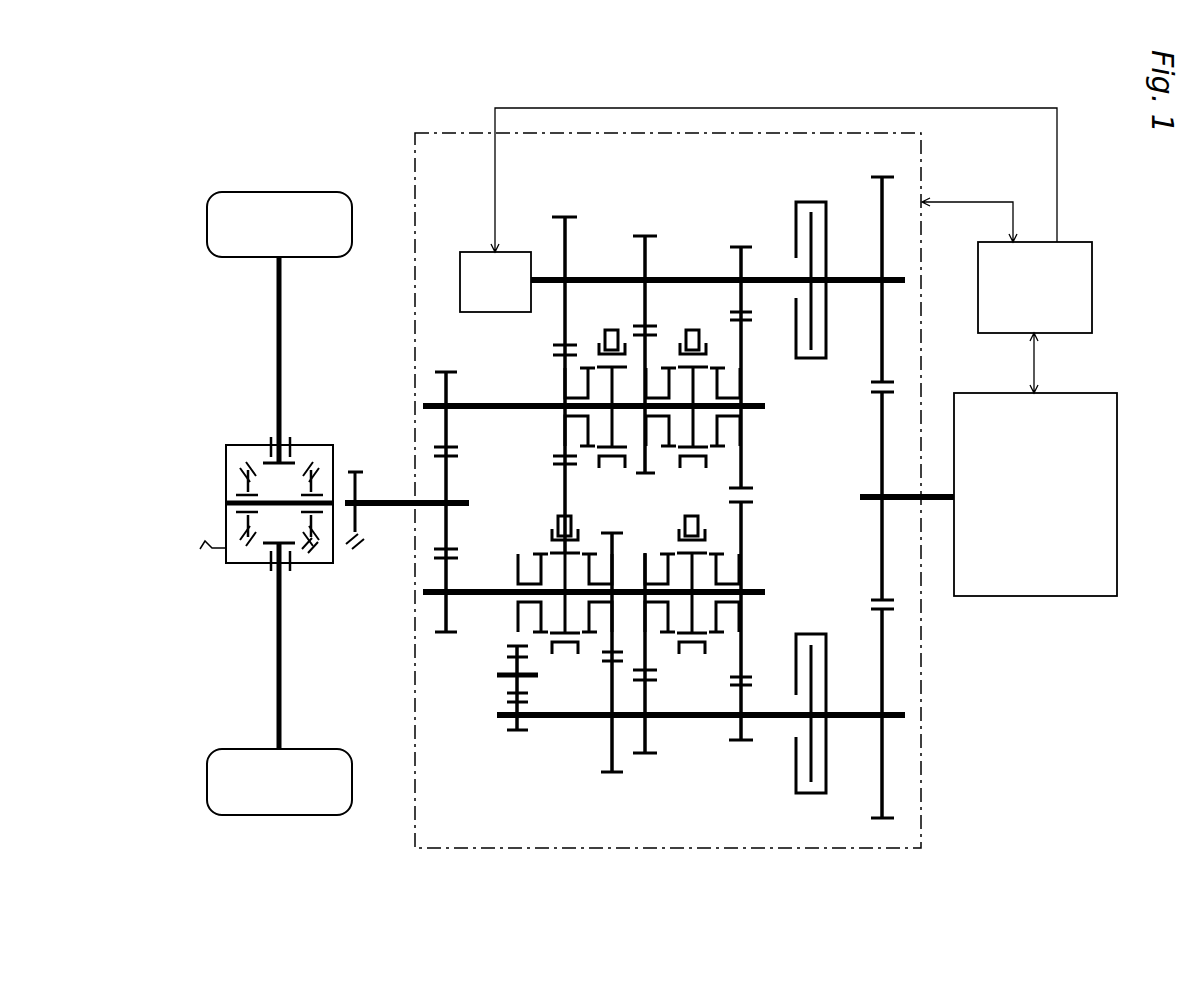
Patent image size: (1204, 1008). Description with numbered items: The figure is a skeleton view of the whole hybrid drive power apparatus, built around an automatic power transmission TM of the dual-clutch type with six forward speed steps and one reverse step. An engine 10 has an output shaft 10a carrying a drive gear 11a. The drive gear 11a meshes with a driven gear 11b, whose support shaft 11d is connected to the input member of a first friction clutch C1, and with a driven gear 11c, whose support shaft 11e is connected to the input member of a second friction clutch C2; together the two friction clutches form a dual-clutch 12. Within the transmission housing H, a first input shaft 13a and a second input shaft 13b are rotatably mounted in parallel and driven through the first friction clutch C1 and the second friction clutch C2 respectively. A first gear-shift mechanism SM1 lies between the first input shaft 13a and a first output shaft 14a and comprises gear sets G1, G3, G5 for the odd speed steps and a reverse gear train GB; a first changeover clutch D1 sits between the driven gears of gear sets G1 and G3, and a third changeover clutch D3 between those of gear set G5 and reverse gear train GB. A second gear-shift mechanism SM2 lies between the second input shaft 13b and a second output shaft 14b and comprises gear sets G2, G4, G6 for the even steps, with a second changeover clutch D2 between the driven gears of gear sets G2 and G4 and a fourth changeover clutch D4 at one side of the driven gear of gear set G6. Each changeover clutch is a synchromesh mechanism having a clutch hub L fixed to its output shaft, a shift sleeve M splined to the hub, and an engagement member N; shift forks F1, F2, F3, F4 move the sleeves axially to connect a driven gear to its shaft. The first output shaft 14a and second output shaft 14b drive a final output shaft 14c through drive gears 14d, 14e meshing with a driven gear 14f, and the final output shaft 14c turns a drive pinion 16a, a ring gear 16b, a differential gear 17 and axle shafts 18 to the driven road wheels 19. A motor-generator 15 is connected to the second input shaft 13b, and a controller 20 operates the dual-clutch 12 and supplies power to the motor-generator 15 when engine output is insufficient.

The engine 10 is at (1046, 597).
The output shaft 10a is at (948, 492).
The drive gear 11a is at (879, 560).
The driven gear 11b is at (880, 658).
The driven gear 11c is at (880, 311).
The support shaft 11d is at (855, 722).
The support shaft 11e is at (843, 278).
The dual-clutch 12 is at (802, 274).
The first input shaft 13a is at (683, 722).
The second input shaft 13b is at (689, 276).
The first output shaft 14a is at (488, 606).
The second output shaft 14b is at (500, 414).
The final output shaft 14c is at (405, 510).
The drive gear 14d is at (448, 584).
The drive gear 14e is at (449, 392).
The driven gear 14f is at (449, 477).
The motor-generator 15 is at (481, 253).
The drive pinion 16a is at (358, 483).
The ring gear 16b is at (336, 553).
The differential gear 17 is at (307, 438).
The axle shaft 18 is at (283, 326).
The driven road wheel 19 is at (296, 202).
The controller 20 is at (1085, 245).
The automatic power transmission TM is at (391, 809).
The transmission housing H is at (652, 497).
The first friction clutch C1 is at (807, 796).
The second friction clutch C2 is at (808, 361).
The first speed gear set G1 is at (734, 755).
The second speed gear set G2 is at (745, 234).
The third speed gear set G3 is at (644, 766).
The fourth speed gear set G4 is at (650, 223).
The fifth speed gear set G5 is at (605, 783).
The sixth speed gear set G6 is at (581, 195).
The reverse gear train GB is at (510, 755).
The first changeover clutch D1 is at (688, 660).
The second changeover clutch D2 is at (686, 470).
The third changeover clutch D3 is at (561, 660).
The fourth changeover clutch D4 is at (608, 470).
The shift fork F1 is at (687, 525).
The shift fork F2 is at (694, 331).
The shift fork F3 is at (562, 518).
The shift fork F4 is at (611, 331).
The first gear-shift mechanism SM1 is at (628, 608).
The second gear-shift mechanism SM2 is at (628, 423).
The shift sleeve M is at (606, 353).
The engagement member N is at (587, 457).
The clutch hub L is at (612, 386).